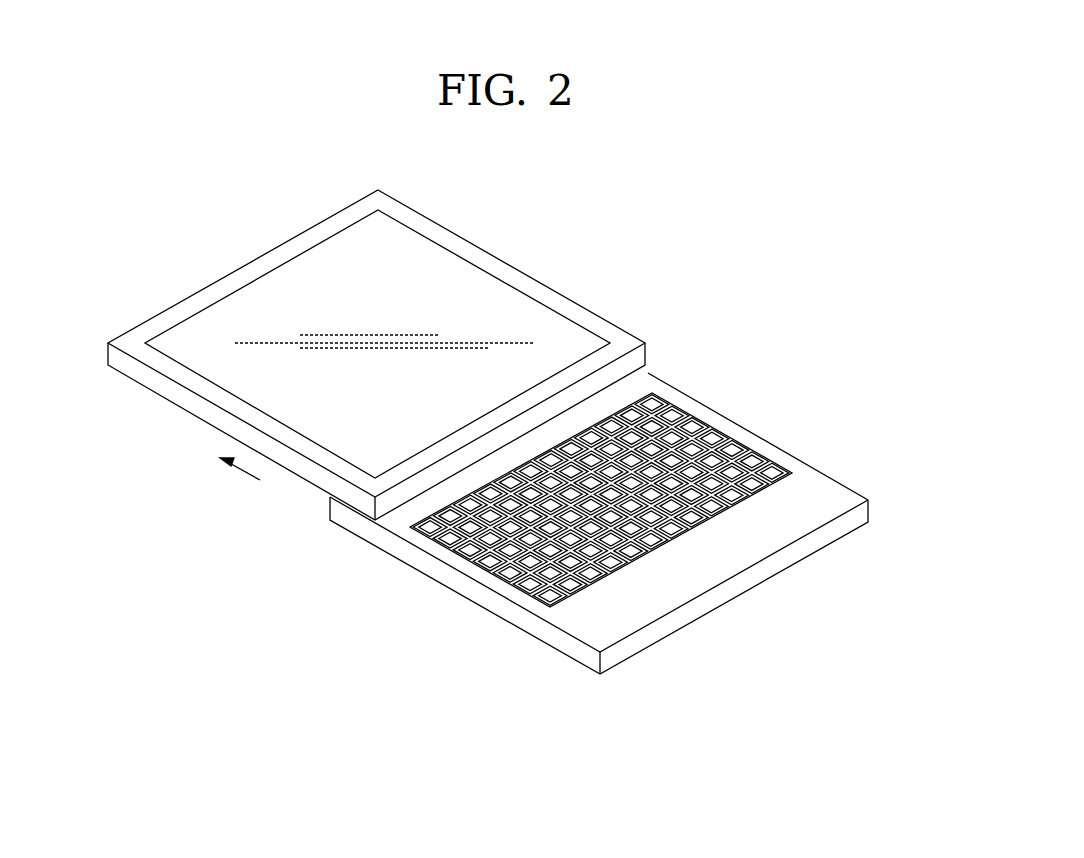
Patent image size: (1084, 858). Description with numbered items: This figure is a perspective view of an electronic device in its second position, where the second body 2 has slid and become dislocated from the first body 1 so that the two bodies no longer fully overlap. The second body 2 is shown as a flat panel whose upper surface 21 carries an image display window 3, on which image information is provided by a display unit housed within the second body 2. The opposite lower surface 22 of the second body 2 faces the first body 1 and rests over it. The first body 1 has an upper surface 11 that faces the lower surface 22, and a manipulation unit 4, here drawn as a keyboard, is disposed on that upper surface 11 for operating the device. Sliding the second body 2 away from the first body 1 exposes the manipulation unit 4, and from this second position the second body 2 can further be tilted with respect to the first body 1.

The first body 1 is at (600, 523).
The upper surface of first body 11 is at (827, 488).
The second body 2 is at (376, 355).
The upper surface of second body 21 is at (520, 283).
The lower surface of second body 22 is at (172, 405).
The image display window 3 is at (450, 278).
The manipulation unit 4 is at (700, 430).